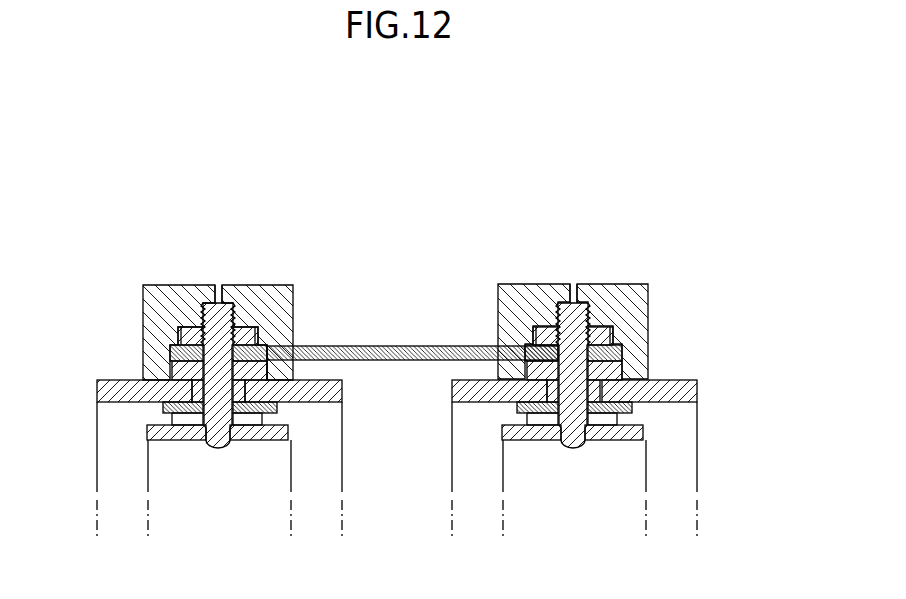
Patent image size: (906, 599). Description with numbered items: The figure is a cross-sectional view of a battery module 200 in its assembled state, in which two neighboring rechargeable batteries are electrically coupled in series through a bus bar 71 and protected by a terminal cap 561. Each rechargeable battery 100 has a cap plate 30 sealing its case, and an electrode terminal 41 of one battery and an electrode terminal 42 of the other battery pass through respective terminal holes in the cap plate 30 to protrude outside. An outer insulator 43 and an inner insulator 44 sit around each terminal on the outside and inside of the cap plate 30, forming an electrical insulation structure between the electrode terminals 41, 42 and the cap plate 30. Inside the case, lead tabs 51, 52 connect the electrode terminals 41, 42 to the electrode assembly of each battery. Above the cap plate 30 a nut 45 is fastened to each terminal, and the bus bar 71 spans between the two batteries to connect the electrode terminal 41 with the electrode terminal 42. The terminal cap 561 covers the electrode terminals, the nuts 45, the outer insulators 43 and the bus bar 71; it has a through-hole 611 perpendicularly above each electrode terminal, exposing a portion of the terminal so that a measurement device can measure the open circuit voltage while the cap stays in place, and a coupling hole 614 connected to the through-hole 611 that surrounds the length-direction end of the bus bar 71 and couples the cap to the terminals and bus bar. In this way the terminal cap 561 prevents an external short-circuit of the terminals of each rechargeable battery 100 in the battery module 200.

The battery module 200 is at (412, 143).
The cap plate 30 is at (110, 392).
The electrode terminal 41 is at (228, 306).
The electrode terminal 42 is at (561, 302).
The outer insulator 43 is at (170, 370).
The inner insulator 44 is at (163, 408).
The nut 45 is at (190, 342).
The lead tab 51 is at (282, 432).
The lead tab 52 is at (640, 428).
The bus bar 71 is at (386, 346).
The rechargeable battery 100 is at (342, 504).
The terminal cap 561 is at (183, 285).
The through-hole 611 is at (214, 300).
The coupling hole 614 is at (284, 368).